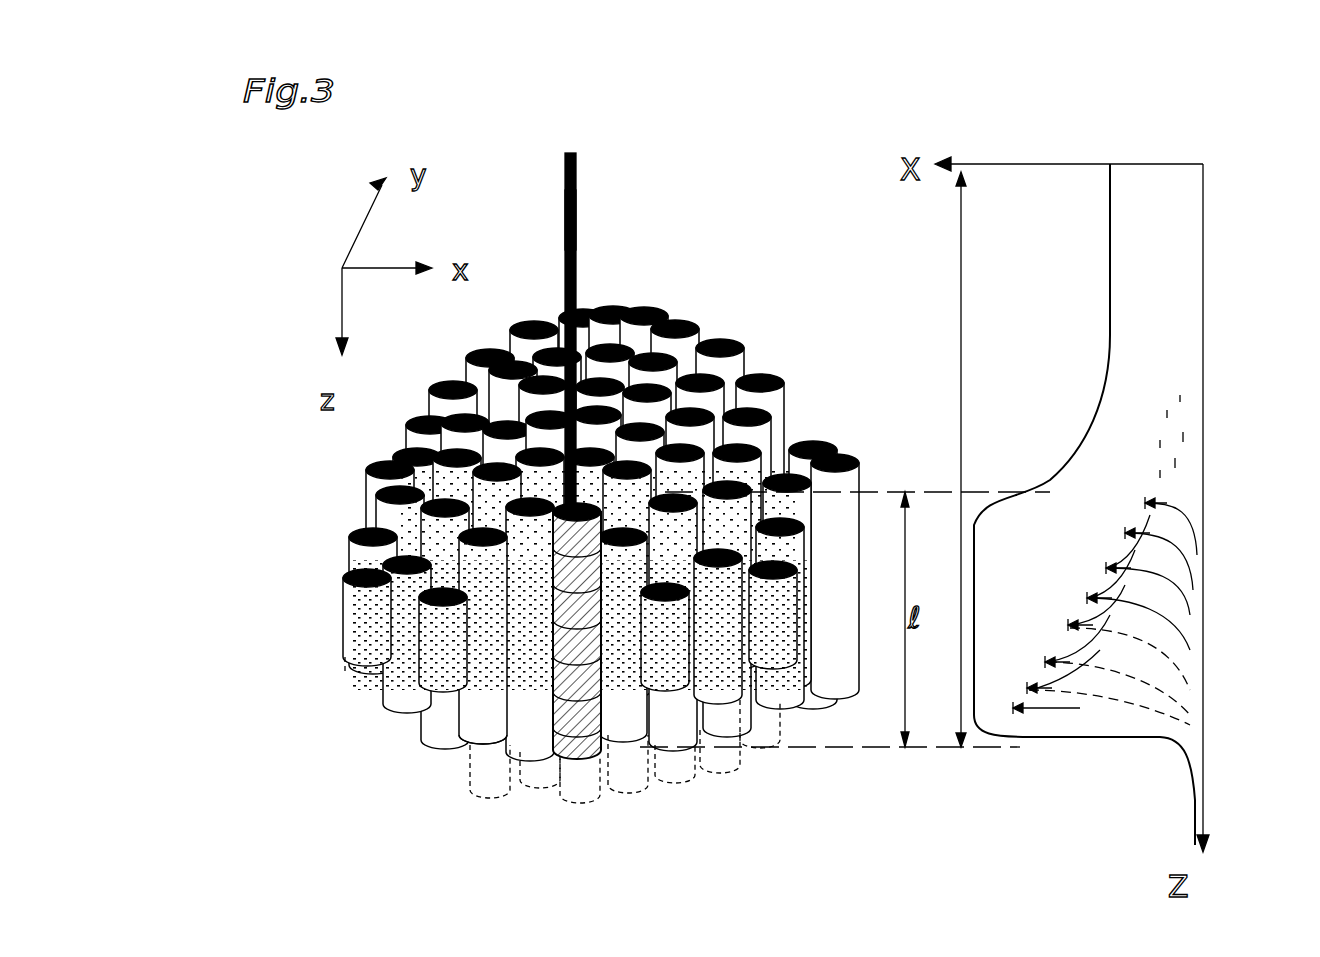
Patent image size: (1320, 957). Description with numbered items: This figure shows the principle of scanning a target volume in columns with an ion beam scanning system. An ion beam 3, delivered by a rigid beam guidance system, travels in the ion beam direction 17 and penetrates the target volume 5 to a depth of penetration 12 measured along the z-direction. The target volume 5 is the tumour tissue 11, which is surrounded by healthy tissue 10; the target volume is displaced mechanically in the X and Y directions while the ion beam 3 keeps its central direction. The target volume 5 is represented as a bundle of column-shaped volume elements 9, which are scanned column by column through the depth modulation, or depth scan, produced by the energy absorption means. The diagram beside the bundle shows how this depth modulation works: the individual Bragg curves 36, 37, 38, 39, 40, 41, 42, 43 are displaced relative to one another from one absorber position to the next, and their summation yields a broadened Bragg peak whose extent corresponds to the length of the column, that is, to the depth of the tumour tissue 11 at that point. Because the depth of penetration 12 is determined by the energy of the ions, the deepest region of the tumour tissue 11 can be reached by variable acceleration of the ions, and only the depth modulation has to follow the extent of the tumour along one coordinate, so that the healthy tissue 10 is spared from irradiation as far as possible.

The ion beam 3 is at (578, 176).
The target volume 5 is at (720, 319).
The volume elements 9 is at (597, 757).
The healthy tissue 10 is at (364, 773).
The tumour tissue 11 is at (497, 753).
The depth of penetration 12 is at (962, 358).
The ion beam direction 17 is at (578, 210).
The Bragg curve 36 is at (1015, 712).
The Bragg curve 37 is at (1027, 688).
The Bragg curve 38 is at (1045, 660).
The Bragg curve 39 is at (1068, 624).
The Bragg curve 40 is at (1087, 597).
The Bragg curve 41 is at (1106, 566).
The Bragg curve 42 is at (1125, 530).
The Bragg curve 43 is at (1152, 498).